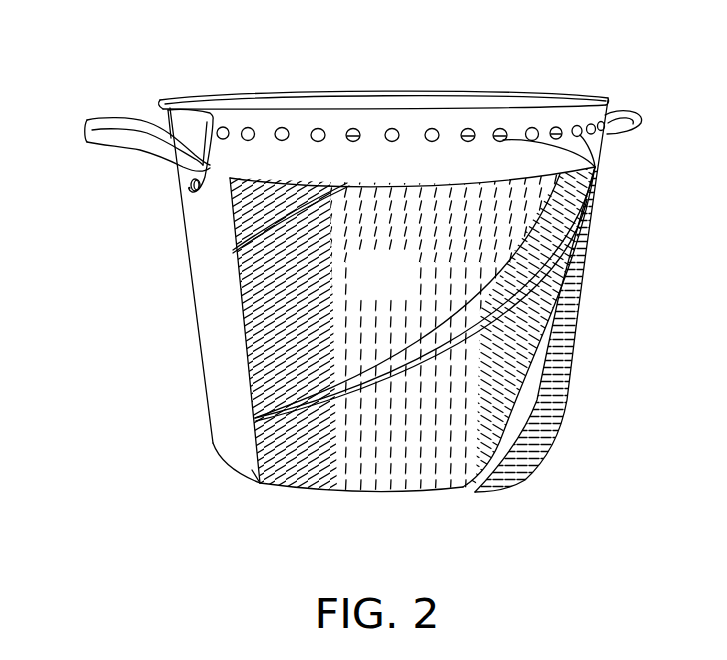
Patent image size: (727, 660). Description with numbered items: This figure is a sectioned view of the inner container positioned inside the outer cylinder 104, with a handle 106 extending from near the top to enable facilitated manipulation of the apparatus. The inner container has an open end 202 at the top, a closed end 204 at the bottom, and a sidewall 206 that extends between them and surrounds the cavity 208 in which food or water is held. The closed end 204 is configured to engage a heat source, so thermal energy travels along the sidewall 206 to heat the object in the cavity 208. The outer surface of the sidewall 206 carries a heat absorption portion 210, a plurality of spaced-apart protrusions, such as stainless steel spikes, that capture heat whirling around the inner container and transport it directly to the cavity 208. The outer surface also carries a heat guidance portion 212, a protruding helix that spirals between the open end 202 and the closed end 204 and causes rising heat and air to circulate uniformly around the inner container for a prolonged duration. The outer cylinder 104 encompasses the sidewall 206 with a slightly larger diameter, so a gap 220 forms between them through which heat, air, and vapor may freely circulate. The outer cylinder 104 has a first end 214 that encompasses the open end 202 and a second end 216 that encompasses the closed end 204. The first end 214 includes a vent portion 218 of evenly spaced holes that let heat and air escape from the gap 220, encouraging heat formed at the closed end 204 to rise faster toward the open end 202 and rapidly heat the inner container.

The outer cylinder 104 is at (187, 258).
The handle 106 is at (87, 121).
The open end 202 is at (263, 96).
The closed end 204 is at (443, 490).
The sidewall 206 is at (363, 284).
The cavity 208 is at (438, 100).
The heat absorption portion 210 is at (510, 347).
The heat guidance portion 212 is at (527, 437).
The first end 214 is at (603, 100).
The second end 216 is at (233, 470).
The vent portion 218 is at (595, 167).
The gap 220 is at (274, 480).